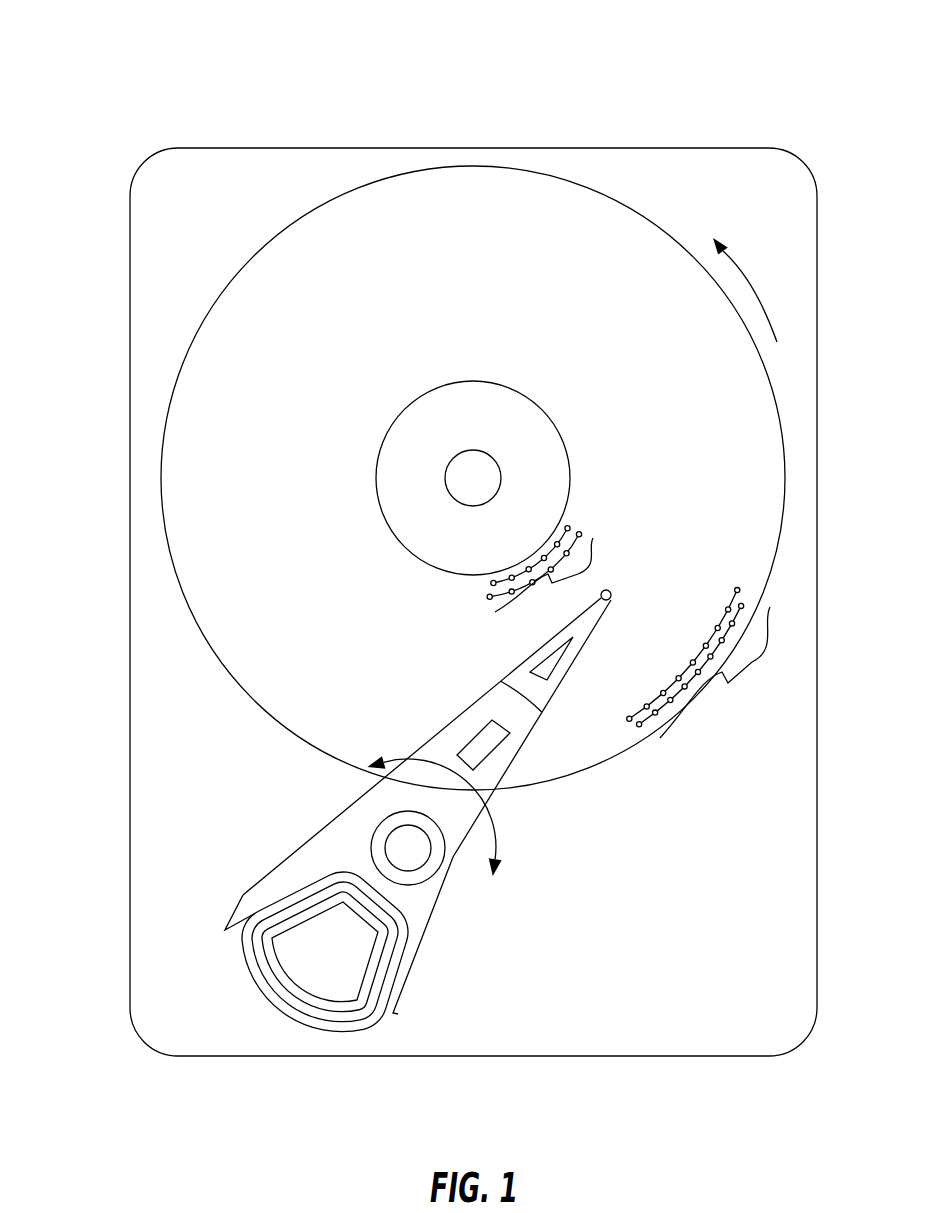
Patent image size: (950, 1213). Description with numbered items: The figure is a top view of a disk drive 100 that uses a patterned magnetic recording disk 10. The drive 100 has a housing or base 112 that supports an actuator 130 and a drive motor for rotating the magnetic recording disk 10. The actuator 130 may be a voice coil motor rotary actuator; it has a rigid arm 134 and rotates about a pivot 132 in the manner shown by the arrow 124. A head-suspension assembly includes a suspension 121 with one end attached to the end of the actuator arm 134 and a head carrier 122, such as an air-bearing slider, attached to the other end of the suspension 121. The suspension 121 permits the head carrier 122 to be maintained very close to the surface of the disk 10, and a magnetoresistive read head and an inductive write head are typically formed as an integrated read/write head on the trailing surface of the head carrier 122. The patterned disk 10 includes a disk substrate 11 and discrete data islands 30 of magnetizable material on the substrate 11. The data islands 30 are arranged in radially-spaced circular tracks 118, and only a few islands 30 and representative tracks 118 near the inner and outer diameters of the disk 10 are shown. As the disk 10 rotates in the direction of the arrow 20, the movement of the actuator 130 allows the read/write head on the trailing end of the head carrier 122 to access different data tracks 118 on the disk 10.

The disk drive 100 is at (126, 48).
The disk substrate 11 is at (511, 582).
The housing or base 112 is at (732, 146).
The patterned magnetic recording disk 10 is at (307, 214).
The arrow 20 is at (747, 272).
The circular tracks 118 is at (766, 580).
The data islands 30 is at (573, 632).
The actuator 130 is at (233, 912).
The suspension 121 is at (470, 802).
The head carrier 122 is at (611, 597).
The rigid arm 134 is at (457, 736).
The pivot 132 is at (400, 843).
The arrow 124 is at (497, 827).